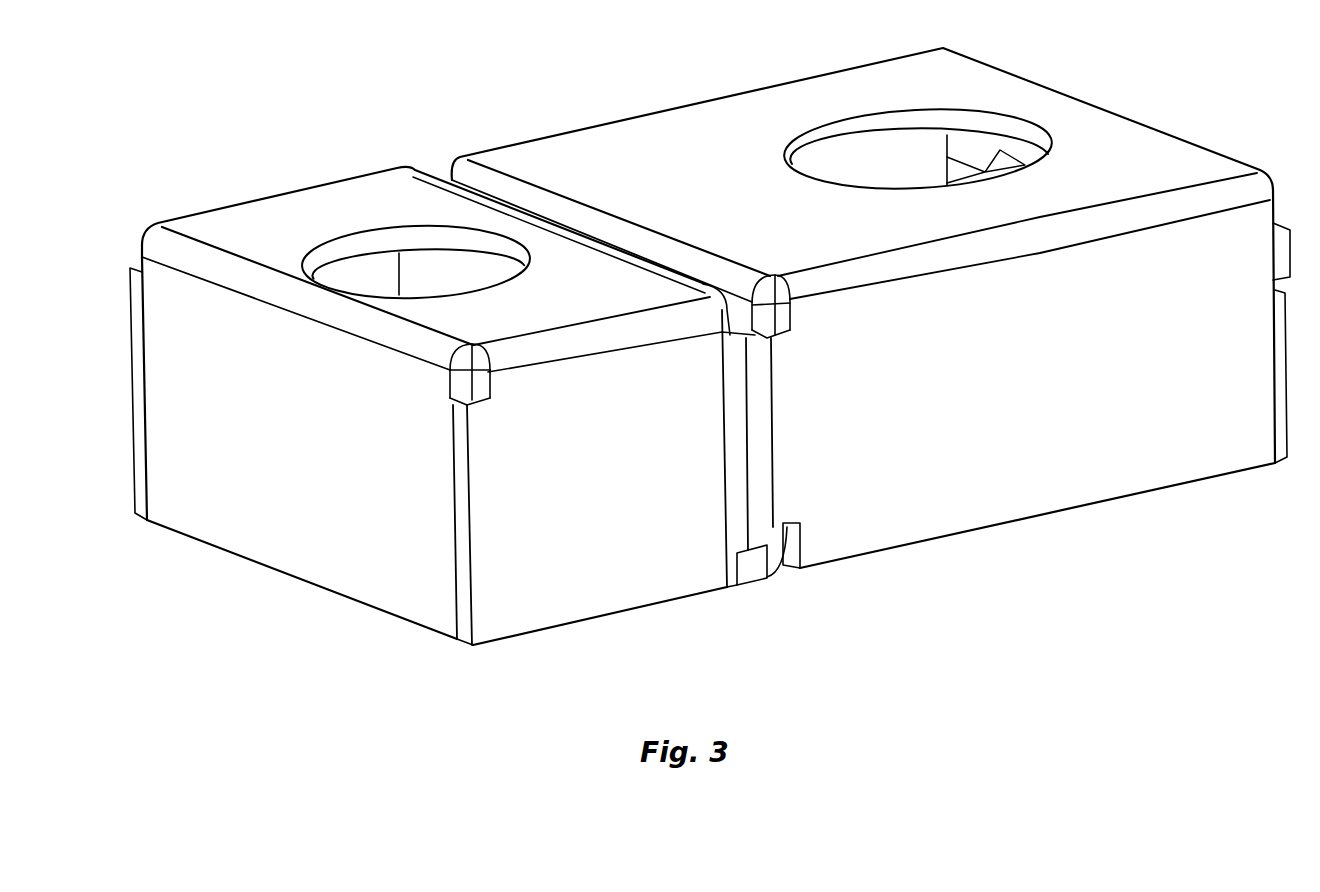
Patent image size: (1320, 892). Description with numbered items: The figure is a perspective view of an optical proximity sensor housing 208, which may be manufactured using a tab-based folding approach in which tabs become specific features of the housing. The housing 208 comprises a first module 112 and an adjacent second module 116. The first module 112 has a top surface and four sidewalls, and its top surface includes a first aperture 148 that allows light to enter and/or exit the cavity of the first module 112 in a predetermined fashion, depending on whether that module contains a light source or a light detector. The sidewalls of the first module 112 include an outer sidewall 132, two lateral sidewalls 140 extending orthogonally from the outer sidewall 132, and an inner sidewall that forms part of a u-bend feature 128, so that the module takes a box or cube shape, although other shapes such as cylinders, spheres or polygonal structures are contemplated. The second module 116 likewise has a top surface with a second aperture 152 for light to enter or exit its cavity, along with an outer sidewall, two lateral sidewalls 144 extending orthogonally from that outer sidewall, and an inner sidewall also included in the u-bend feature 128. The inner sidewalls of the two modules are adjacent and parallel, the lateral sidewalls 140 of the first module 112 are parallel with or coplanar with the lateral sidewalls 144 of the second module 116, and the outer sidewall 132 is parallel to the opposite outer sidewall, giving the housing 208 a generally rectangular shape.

The first module 112 is at (223, 227).
The second module 116 is at (703, 137).
The u-bend feature 128 is at (762, 590).
The outer sidewall 132 is at (265, 460).
The lateral sidewalls 140 is at (590, 527).
The lateral sidewalls 144 is at (1013, 445).
The first aperture 148 is at (372, 250).
The second aperture 152 is at (867, 137).
The housing 208 is at (240, 632).